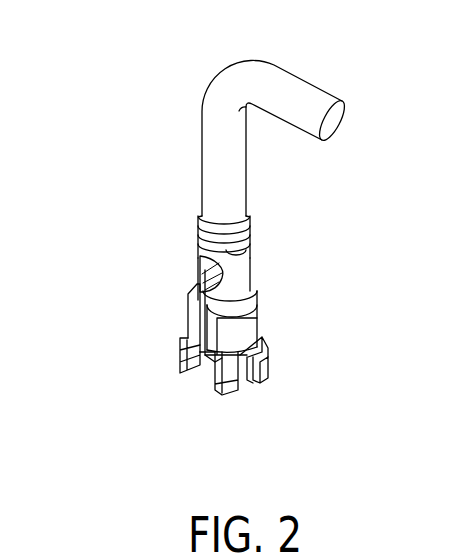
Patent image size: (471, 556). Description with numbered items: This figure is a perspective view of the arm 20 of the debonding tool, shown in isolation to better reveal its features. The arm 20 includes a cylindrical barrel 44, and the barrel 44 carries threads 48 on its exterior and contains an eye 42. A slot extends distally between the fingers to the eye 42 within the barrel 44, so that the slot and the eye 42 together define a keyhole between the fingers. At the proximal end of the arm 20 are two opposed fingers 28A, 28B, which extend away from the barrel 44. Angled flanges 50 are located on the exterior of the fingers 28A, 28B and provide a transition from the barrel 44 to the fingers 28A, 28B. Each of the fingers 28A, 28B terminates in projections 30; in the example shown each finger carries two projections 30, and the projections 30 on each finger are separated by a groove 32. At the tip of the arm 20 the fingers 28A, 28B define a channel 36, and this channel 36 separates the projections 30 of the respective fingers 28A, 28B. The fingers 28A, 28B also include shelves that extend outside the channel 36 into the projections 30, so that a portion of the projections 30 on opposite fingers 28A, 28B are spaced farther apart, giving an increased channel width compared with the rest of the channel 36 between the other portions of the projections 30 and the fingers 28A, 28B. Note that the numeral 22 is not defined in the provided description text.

The arm 20 is at (157, 102).
The bent tube / pin section 22 is at (228, 82).
The threads 48 is at (250, 232).
The barrel 44 is at (238, 272).
The eye 42 is at (200, 268).
The angled flanges 50 is at (252, 299).
The groove 32 is at (248, 383).
The first finger 28A is at (188, 321).
The second finger 28B is at (243, 335).
The projections 30 is at (178, 360).
The channel 36 is at (208, 368).